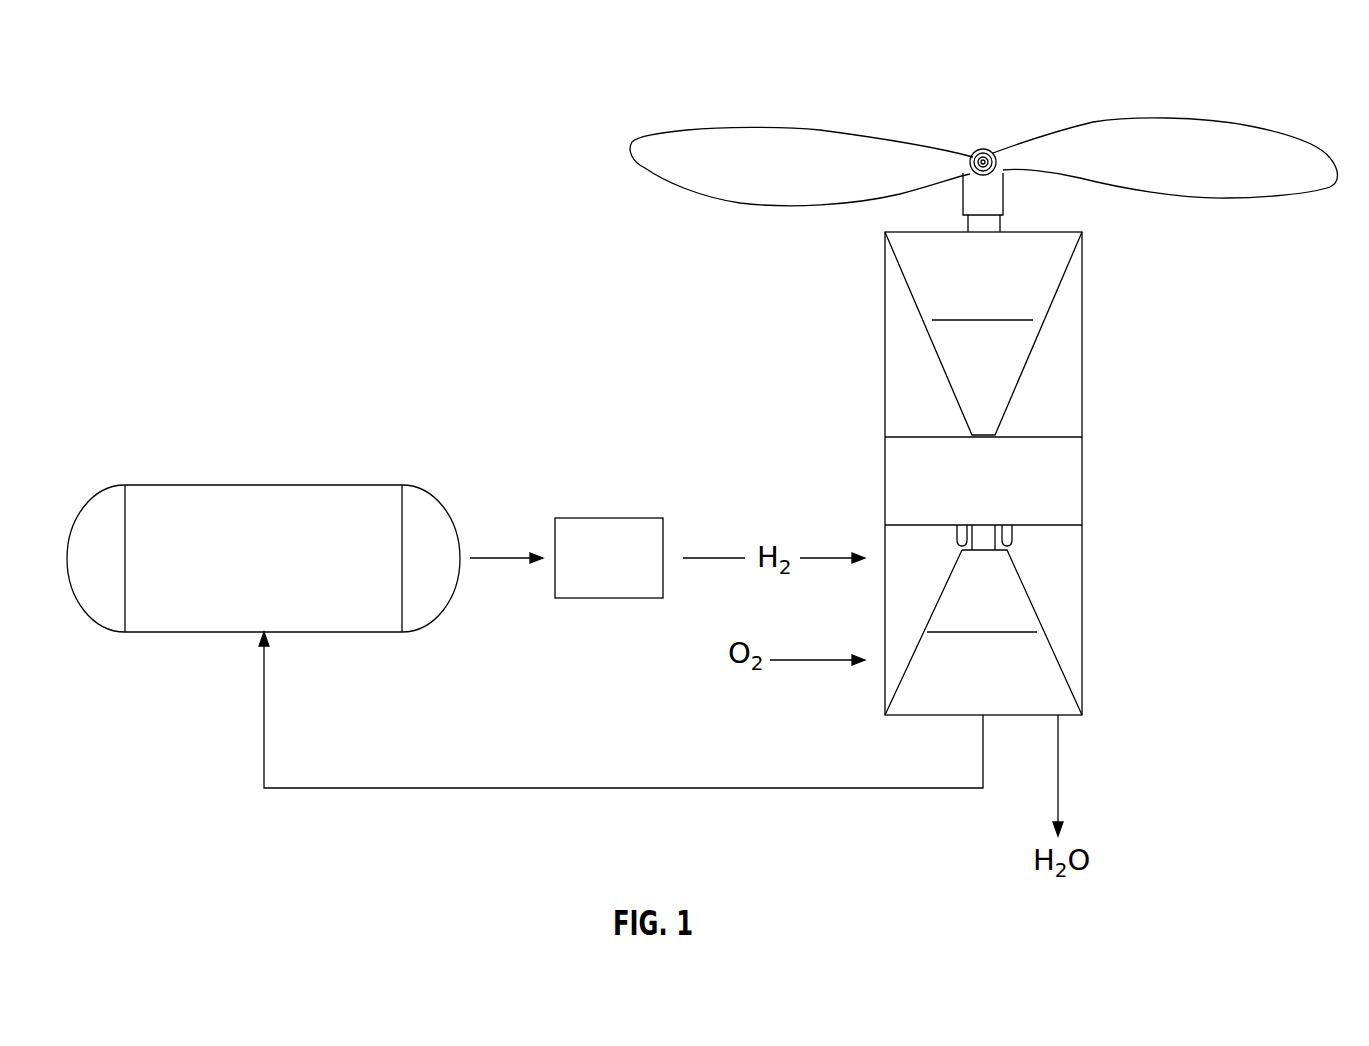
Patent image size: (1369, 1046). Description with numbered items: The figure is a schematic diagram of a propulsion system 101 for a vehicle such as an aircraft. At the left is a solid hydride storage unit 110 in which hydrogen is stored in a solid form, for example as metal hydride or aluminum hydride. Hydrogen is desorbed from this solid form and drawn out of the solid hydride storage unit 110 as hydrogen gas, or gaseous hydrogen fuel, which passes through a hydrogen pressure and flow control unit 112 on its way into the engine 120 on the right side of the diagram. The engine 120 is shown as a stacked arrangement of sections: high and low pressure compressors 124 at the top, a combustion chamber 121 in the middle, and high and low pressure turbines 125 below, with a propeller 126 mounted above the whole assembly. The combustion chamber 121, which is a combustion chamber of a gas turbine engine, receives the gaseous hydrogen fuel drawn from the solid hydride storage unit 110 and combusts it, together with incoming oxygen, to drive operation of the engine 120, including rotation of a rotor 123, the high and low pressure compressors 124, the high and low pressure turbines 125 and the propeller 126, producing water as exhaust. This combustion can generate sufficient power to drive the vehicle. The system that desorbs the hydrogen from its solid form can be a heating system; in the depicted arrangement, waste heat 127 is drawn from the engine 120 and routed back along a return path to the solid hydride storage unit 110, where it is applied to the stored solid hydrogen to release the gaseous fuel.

The propulsion system 101 is at (300, 98).
The solid hydride storage unit 110 is at (172, 485).
The hydrogen pressure and flow control unit 112 is at (608, 528).
The engine 120 is at (1028, 444).
The combustion chamber 121 is at (1070, 494).
The rotor 123 is at (987, 533).
The high and low pressure compressors 124 is at (1013, 321).
The high and low pressure turbines 125 is at (1013, 631).
The propeller 126 is at (975, 152).
The waste heat 127 is at (465, 788).